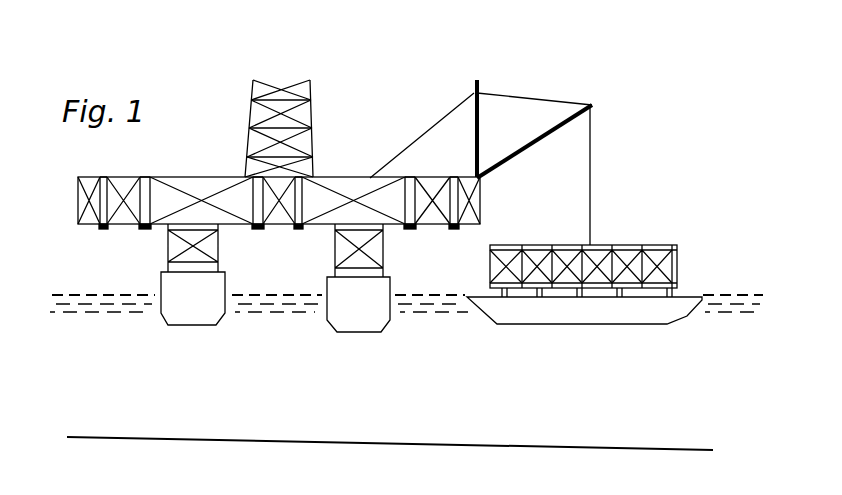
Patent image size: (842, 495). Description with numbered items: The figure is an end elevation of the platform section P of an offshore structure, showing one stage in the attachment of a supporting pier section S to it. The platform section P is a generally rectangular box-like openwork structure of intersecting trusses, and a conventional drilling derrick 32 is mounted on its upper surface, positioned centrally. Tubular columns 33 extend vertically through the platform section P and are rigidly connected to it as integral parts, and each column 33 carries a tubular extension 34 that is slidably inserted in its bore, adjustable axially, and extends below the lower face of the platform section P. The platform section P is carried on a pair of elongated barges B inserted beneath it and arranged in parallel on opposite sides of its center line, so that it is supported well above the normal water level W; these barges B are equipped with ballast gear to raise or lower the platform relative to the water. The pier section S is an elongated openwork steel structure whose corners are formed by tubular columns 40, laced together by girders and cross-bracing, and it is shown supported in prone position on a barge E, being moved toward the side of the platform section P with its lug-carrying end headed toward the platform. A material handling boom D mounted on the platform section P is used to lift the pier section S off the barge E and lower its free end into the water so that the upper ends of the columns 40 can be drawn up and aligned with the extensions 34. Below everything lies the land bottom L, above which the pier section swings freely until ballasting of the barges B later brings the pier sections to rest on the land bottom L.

The drilling derrick 32 is at (313, 112).
The tubular column 33 is at (148, 174).
The tubular extension 34 is at (103, 227).
The tubular columns 40 is at (537, 245).
The platform section P is at (197, 174).
The material handling boom D is at (521, 150).
The pier section S is at (631, 246).
The barge E is at (610, 320).
The elongated barges B is at (184, 325).
The water level W is at (92, 295).
The land bottom L is at (85, 435).